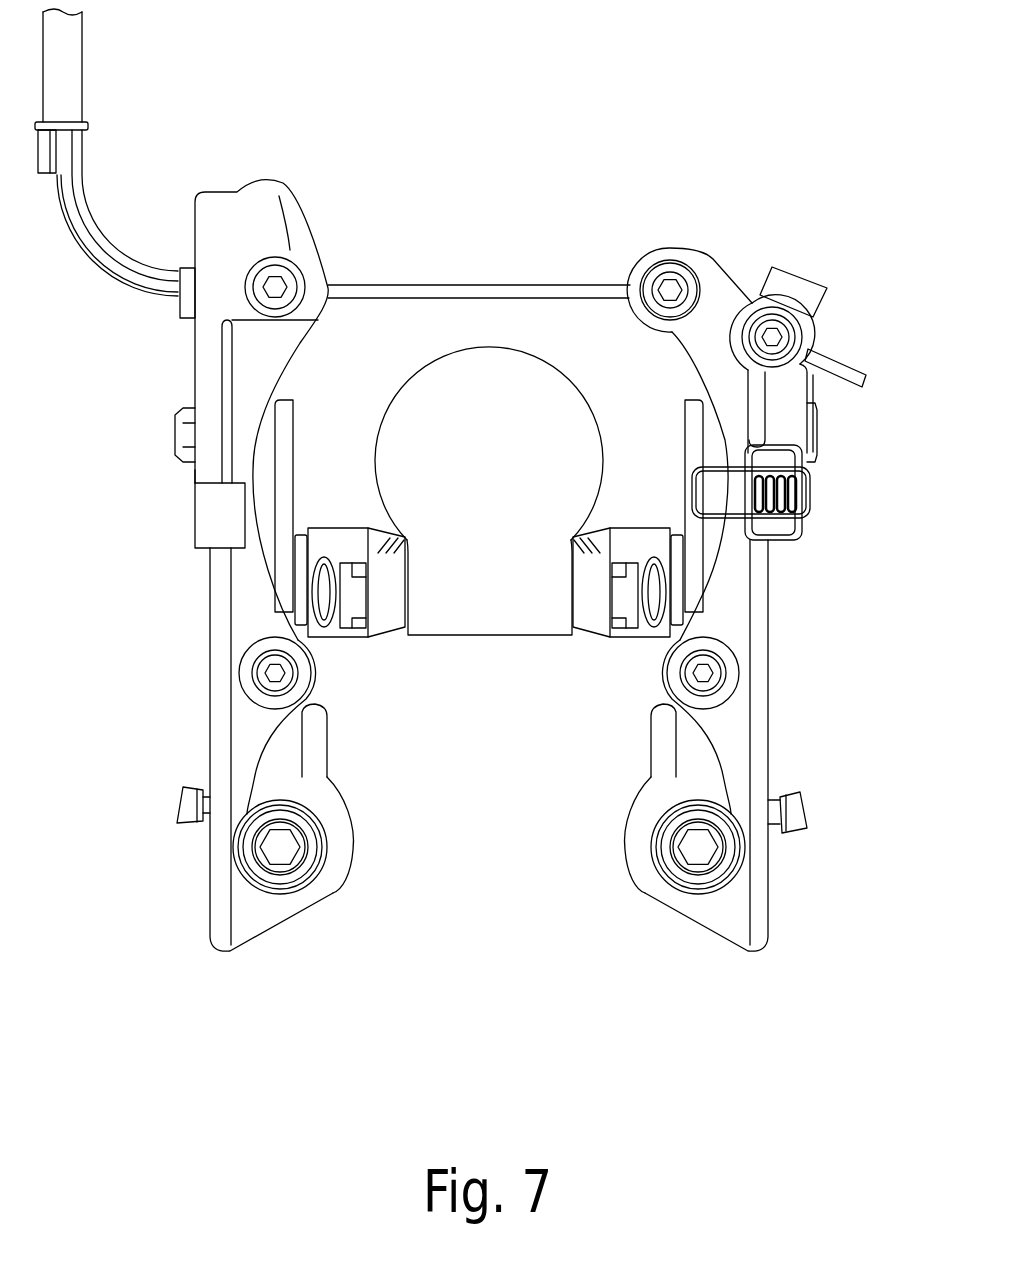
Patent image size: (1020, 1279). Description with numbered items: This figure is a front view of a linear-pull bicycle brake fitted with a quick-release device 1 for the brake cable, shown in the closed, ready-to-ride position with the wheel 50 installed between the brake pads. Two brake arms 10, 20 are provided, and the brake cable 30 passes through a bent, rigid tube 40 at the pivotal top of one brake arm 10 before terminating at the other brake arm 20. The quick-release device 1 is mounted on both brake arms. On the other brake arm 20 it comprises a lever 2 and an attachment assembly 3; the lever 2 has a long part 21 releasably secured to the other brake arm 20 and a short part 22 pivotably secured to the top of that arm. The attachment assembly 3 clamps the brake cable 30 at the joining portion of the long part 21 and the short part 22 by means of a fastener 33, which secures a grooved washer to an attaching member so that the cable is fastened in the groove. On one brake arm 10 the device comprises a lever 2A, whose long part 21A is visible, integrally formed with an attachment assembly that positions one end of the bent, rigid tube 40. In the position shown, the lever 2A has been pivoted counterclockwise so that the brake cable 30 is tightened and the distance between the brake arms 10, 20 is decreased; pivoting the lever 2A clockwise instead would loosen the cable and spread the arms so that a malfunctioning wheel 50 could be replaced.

The quick-release device 1 is at (622, 150).
The lever 2 is at (815, 535).
The lever 2A is at (188, 514).
The attachment assembly 3 is at (837, 283).
The brake arm 10 is at (225, 650).
The brake arm 20 is at (780, 671).
The long part 21 is at (792, 392).
The long part 21A is at (207, 363).
The short part 22 is at (757, 285).
The brake cable 30 is at (435, 278).
The fastener 33 is at (812, 298).
The bent, rigid tube 40 is at (100, 152).
The wheel 50 is at (491, 648).